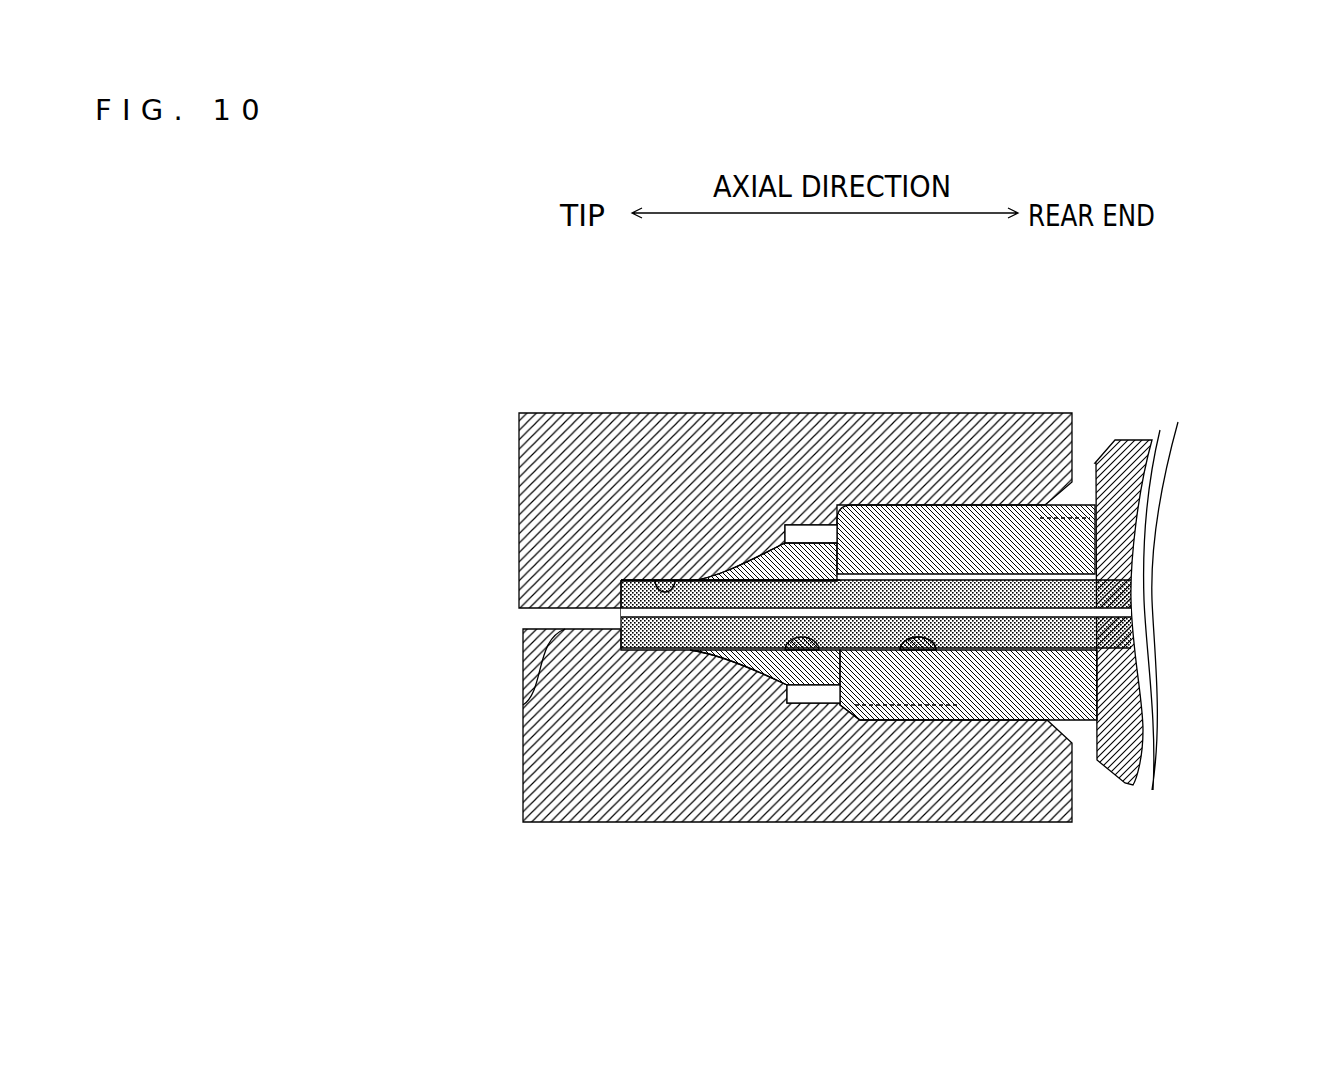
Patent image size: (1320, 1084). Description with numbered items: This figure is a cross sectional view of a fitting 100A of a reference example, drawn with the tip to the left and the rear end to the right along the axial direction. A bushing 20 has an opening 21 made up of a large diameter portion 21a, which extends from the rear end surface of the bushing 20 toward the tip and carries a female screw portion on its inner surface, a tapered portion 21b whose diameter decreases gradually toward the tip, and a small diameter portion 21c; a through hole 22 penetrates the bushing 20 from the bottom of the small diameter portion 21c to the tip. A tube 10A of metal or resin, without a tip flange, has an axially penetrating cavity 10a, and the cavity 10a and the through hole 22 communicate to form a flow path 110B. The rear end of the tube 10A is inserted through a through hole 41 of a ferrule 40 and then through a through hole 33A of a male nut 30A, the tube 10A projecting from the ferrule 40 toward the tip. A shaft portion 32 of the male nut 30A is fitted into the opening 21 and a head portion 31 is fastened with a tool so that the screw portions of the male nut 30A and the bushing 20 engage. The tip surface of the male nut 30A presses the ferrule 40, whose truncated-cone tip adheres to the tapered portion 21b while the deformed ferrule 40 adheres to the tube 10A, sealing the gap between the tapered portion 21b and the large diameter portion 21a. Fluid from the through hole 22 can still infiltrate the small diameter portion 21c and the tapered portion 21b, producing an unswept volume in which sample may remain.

The fitting 100A is at (1260, 231).
The flow path 110B is at (428, 590).
The tube 10A is at (672, 633).
The cavity 10a is at (522, 703).
The bushing 20 is at (893, 445).
The opening 21 is at (848, 316).
The large diameter portion 21a is at (845, 540).
The tapered portion 21b is at (722, 578).
The small diameter portion 21c is at (653, 587).
The through hole 22 is at (620, 617).
The male nut 30A is at (1155, 314).
The head portion 31 is at (1122, 460).
The shaft portion 32 is at (1010, 540).
The through hole 33A is at (937, 652).
The ferrule 40 is at (767, 655).
The through hole 41 is at (822, 657).